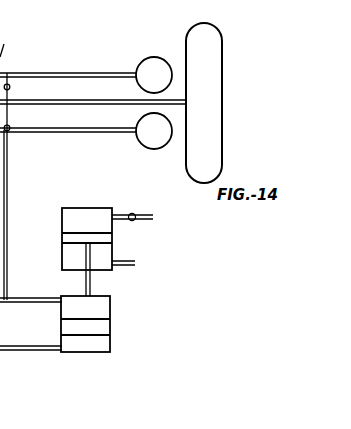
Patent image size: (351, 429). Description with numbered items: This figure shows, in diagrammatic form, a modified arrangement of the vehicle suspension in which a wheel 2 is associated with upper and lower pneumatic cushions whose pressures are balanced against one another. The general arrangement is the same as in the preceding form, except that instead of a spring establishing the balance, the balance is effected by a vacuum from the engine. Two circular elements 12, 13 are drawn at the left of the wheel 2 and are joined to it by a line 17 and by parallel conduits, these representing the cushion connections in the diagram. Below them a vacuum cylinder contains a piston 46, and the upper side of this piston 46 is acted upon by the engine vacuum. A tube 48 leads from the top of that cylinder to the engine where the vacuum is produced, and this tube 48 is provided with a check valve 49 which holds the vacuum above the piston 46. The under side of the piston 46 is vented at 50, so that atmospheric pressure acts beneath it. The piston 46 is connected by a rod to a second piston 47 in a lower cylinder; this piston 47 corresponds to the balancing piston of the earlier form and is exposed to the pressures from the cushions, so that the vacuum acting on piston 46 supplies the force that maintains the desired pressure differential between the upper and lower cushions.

The wheel 2 is at (209, 152).
The valve 12 is at (86, 75).
The valve 13 is at (86, 131).
The pipe 17 is at (98, 99).
The piston 46 is at (71, 240).
The piston 47 is at (93, 328).
The tube 48 is at (137, 215).
The check valve 49 is at (129, 214).
The vent 50 is at (129, 262).